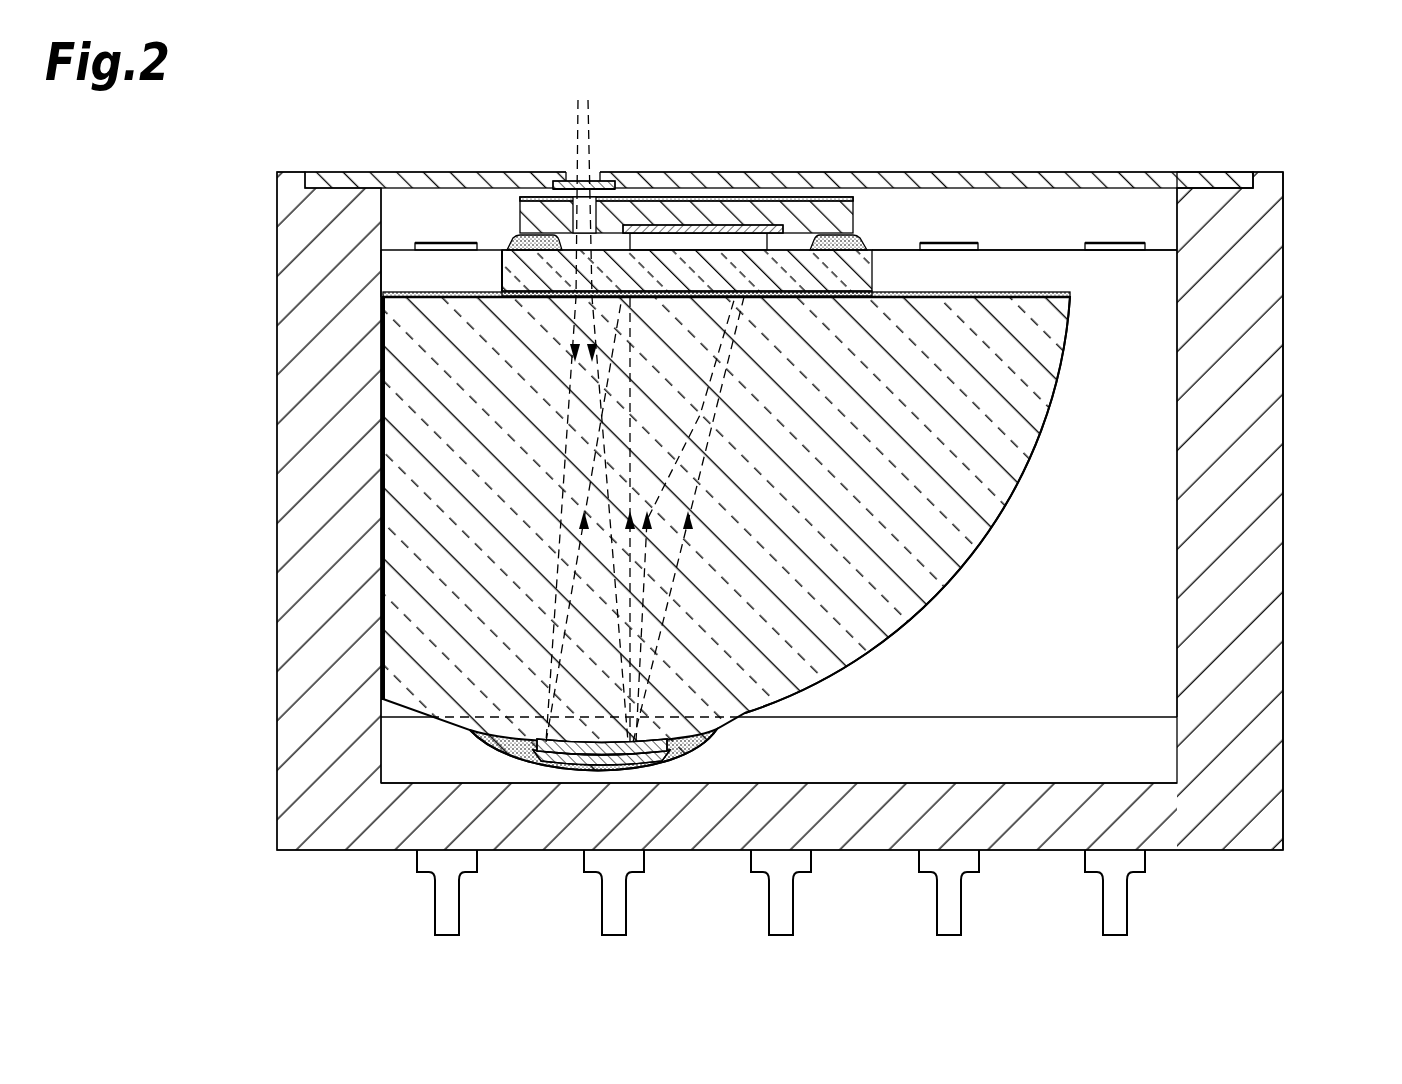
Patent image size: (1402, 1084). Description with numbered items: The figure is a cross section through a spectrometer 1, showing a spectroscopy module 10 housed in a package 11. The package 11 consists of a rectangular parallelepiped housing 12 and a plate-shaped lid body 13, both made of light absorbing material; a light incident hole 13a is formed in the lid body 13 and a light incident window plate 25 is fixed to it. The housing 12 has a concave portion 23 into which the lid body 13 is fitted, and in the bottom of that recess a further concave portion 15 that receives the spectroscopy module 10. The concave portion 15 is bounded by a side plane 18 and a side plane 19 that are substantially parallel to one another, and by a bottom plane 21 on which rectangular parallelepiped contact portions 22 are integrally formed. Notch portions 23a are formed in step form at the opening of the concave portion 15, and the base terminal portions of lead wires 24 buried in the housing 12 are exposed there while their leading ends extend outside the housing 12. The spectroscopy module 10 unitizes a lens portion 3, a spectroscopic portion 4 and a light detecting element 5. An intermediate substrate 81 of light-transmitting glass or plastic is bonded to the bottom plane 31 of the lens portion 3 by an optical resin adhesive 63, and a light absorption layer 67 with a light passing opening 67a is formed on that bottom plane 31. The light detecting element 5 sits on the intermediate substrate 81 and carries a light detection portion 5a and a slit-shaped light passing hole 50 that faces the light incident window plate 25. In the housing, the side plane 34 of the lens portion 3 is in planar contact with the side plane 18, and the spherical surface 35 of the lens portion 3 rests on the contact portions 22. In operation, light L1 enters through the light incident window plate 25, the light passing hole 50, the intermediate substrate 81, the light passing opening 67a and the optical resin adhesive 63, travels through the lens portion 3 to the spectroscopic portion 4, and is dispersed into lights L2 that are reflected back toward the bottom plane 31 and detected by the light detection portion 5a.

The spectrometer 1 is at (1310, 130).
The lens portion 3 is at (966, 517).
The spectroscopic portion 4 is at (528, 768).
The light detecting element 5 is at (815, 205).
The light detection portion 5a is at (720, 226).
The spectroscopy module 10 is at (971, 572).
The package 11 is at (1285, 430).
The housing 12 is at (1274, 530).
The lid body 13 is at (968, 181).
The light incident hole 13a is at (575, 172).
The concave portion 15 is at (1174, 390).
The side plane 18 is at (380, 475).
The side plane 19 is at (1174, 470).
The bottom plane 21 is at (1034, 783).
The contact portion 22 is at (1122, 717).
The concave portion 23 is at (1215, 178).
The notch portion 23a is at (1028, 245).
The lead wire 24 is at (446, 243).
The light incident window plate 25 is at (597, 182).
The bottom plane 31 is at (1024, 294).
The side plane 34 is at (380, 545).
The spherical surface 35 is at (858, 660).
The light passing hole 50 is at (577, 200).
The optical resin adhesive 63 is at (856, 290).
The light absorption layer 67 is at (402, 293).
The light passing opening 67a is at (514, 288).
The intermediate substrate 81 is at (868, 265).
The light L1 is at (586, 125).
The lights L2 is at (678, 478).